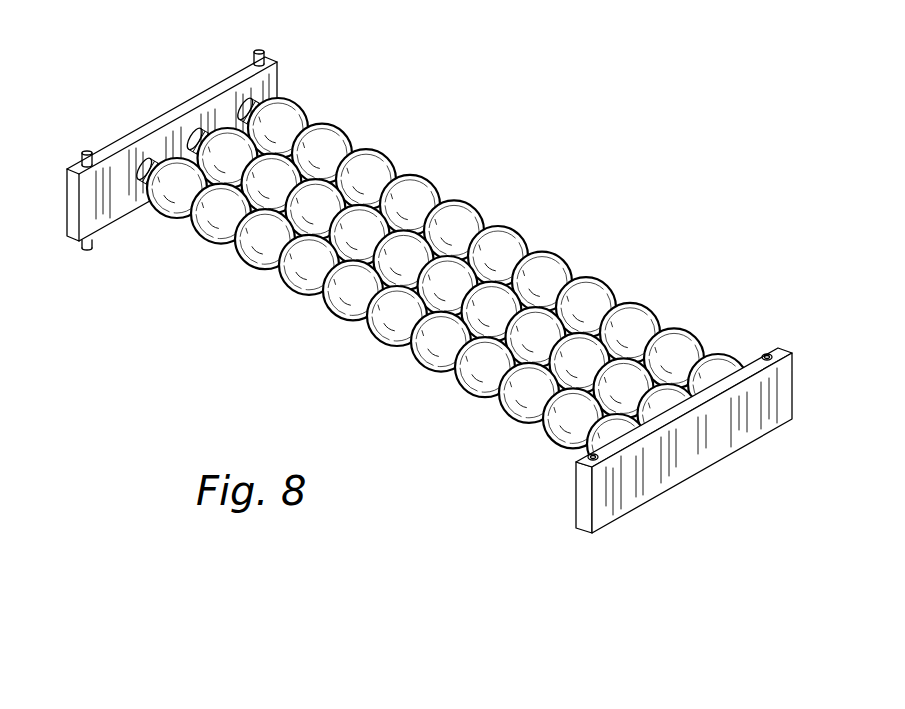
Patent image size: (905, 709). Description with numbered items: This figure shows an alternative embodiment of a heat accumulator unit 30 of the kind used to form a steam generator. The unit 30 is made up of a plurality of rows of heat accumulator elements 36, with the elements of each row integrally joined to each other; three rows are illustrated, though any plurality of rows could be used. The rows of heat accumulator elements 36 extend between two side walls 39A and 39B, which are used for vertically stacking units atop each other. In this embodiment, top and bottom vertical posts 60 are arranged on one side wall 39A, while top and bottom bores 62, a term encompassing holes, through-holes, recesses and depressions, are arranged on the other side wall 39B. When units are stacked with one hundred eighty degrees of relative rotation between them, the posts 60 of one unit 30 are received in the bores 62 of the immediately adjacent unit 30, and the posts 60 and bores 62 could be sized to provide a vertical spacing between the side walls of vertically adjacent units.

The heat accumulator unit 30 is at (466, 161).
The heat accumulator elements 36 is at (478, 212).
The side wall 39A is at (172, 108).
The side wall 39B is at (688, 468).
The vertical posts 60 is at (253, 60).
The bores 62 is at (768, 357).